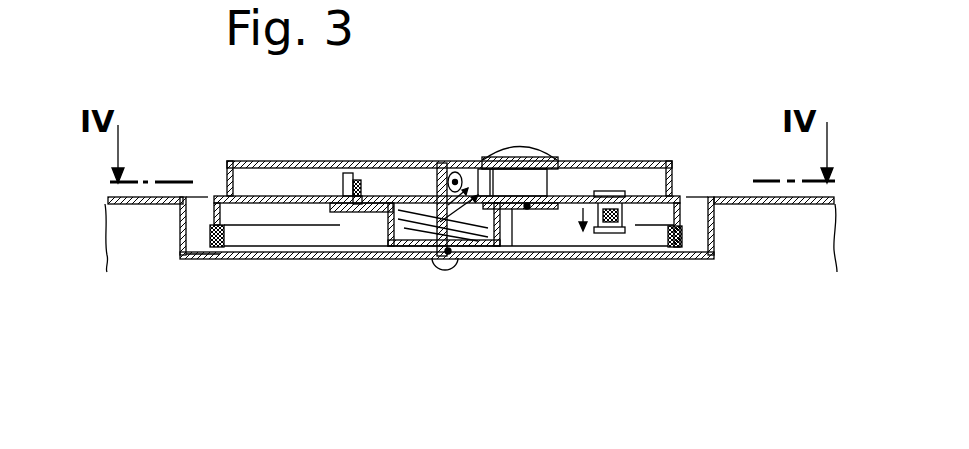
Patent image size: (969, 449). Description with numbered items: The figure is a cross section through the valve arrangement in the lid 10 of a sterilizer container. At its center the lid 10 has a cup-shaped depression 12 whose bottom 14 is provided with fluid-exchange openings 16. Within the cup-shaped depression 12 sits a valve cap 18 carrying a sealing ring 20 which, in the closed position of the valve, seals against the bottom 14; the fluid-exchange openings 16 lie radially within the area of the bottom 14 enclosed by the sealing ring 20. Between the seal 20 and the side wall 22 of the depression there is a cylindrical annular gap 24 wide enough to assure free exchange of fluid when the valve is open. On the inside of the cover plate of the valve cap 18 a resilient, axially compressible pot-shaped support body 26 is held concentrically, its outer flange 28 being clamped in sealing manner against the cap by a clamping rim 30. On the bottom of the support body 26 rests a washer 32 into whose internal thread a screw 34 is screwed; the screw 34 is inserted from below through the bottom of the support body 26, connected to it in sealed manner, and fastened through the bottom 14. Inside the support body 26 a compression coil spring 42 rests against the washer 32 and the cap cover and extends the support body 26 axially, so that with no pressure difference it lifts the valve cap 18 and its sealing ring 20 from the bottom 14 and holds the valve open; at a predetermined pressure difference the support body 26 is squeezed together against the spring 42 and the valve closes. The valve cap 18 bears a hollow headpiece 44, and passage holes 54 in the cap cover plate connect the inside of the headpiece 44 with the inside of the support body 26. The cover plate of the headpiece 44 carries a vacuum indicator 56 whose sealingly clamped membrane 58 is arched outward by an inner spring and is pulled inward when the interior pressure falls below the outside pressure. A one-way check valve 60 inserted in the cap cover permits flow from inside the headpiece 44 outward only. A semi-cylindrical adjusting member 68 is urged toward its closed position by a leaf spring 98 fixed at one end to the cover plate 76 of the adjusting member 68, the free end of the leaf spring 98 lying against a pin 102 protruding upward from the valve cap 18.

The lid 10 is at (792, 205).
The cup-shaped depression 12 is at (177, 232).
The bottom 14 is at (287, 259).
The fluid-exchange openings 16 is at (258, 259).
The valve cap 18 is at (218, 198).
The sealing ring 20 is at (700, 259).
The side wall 22 is at (717, 228).
The cylindrical annular gap 24 is at (686, 207).
The pot-shaped support body 26 is at (383, 225).
The outer flange 28 is at (523, 209).
The clamping rim 30 is at (393, 205).
The washer 32 is at (430, 232).
The screw 34 is at (455, 262).
The compression coil spring 42 is at (392, 204).
The hollow headpiece 44 is at (590, 161).
The passage holes 54 is at (503, 203).
The vacuum indicator 56 is at (520, 182).
The membrane 58 is at (517, 156).
The one-way check valve 60 is at (627, 220).
The adjusting member 68 is at (243, 162).
The cover plate 76 is at (301, 161).
The leaf spring 98 is at (362, 188).
The pin 102 is at (343, 187).